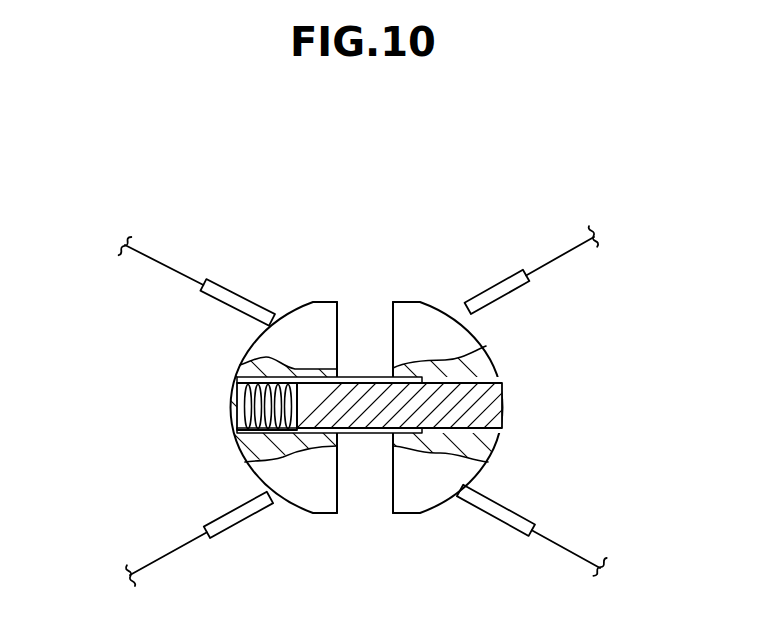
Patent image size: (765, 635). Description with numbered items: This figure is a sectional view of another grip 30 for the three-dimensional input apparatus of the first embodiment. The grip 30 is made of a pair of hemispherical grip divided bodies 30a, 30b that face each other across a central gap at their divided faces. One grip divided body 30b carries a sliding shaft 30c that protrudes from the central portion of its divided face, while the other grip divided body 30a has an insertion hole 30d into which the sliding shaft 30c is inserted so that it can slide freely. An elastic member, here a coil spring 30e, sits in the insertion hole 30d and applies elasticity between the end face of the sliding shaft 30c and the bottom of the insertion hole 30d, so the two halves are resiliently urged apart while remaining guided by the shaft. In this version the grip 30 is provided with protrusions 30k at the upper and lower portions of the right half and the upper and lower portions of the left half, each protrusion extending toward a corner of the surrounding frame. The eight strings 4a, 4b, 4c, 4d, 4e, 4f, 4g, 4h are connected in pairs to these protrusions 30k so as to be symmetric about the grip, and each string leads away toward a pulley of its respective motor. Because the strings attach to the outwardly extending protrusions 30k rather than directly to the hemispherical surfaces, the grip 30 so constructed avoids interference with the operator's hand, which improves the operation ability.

The grip 30 is at (320, 368).
The grip divided body 30a is at (317, 317).
The grip divided body 30b is at (403, 313).
The sliding shaft 30c is at (367, 410).
The insertion hole 30d is at (335, 434).
The coil spring 30e is at (257, 405).
The protrusions 30k is at (231, 304).
The string 4a is at (114, 271).
The string 4b is at (135, 255).
The string 4c is at (608, 262).
The string 4d is at (584, 246).
The string 4e is at (133, 577).
The string 4f is at (116, 553).
The string 4g is at (616, 543).
The string 4h is at (599, 566).